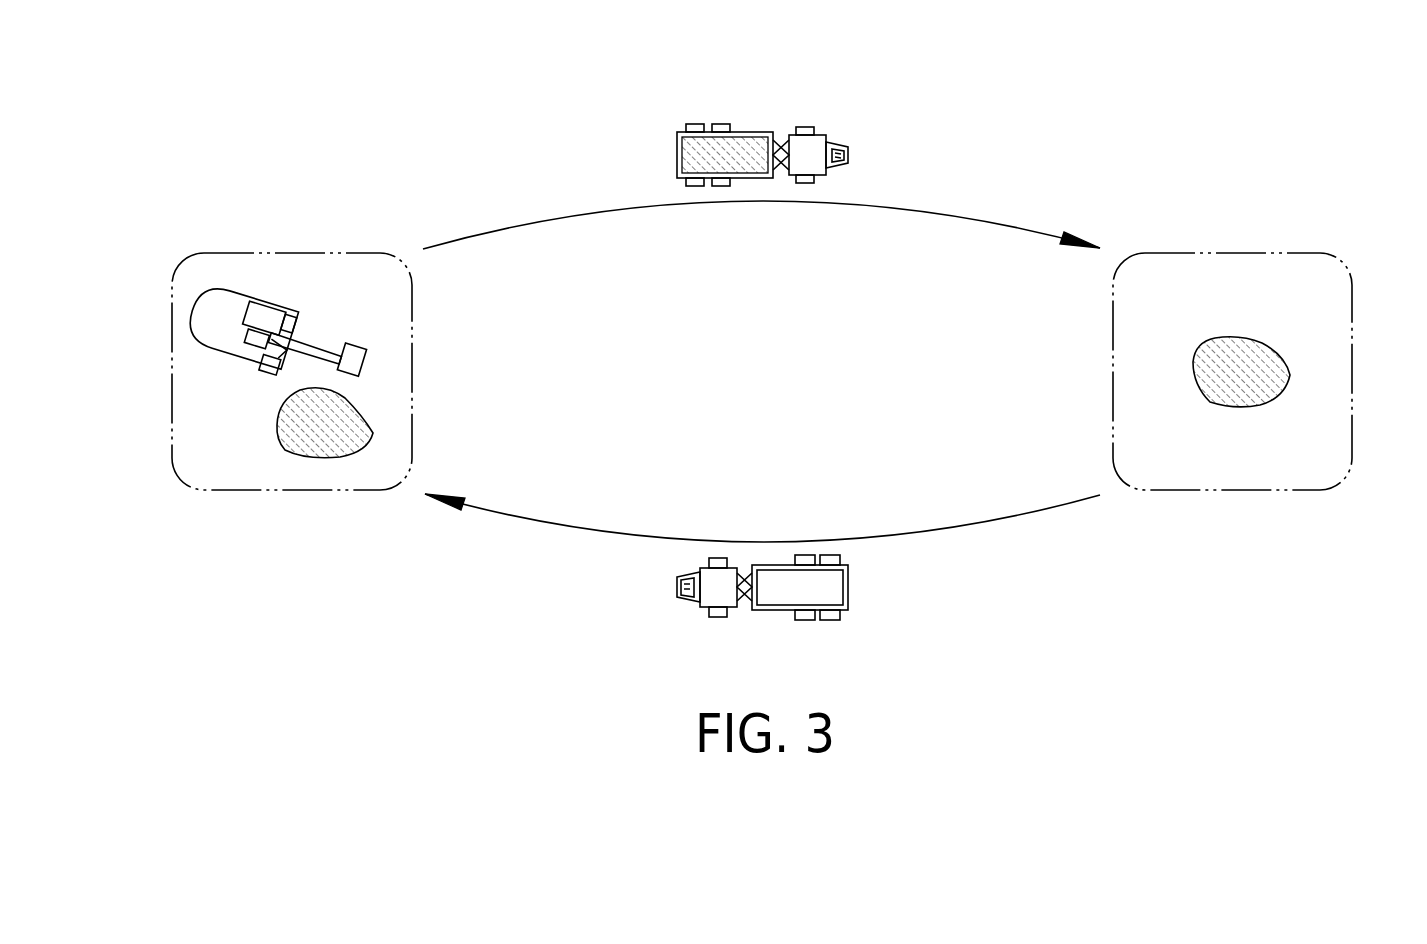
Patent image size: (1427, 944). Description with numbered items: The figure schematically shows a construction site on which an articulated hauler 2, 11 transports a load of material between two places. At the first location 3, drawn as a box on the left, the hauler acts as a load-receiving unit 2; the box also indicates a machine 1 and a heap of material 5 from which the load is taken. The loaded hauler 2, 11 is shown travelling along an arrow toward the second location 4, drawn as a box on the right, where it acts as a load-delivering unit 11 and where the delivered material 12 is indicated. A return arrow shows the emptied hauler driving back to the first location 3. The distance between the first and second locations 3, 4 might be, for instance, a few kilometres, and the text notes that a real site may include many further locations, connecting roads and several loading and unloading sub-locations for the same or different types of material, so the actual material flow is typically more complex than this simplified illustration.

The excavator / earth-moving machine 1 is at (232, 330).
The load-receiving unit 2 is at (765, 372).
The first location 3 is at (172, 232).
The second location 4 is at (1360, 237).
The excavated material 5 is at (322, 428).
The load-delivering unit 11 is at (750, 142).
The deposited material heap 12 is at (1243, 368).